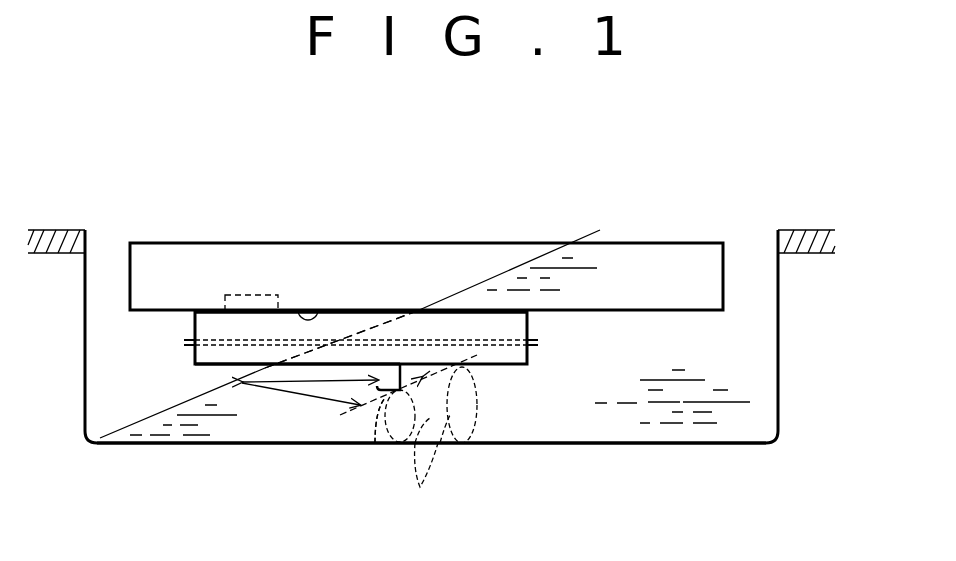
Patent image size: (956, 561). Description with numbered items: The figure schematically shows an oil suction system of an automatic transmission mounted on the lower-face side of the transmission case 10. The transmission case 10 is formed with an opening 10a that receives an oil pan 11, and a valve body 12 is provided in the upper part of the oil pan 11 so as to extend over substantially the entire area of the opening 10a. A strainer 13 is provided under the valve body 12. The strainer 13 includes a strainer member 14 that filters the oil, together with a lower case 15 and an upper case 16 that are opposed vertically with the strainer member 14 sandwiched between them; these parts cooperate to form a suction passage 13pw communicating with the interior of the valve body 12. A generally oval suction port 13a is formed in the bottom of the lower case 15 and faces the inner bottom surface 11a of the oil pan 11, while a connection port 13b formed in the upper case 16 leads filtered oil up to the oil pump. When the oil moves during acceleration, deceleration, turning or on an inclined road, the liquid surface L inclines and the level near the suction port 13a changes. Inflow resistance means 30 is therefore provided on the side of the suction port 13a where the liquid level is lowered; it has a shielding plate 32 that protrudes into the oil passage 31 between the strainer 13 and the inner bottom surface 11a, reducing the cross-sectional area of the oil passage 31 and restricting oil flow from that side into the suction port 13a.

The transmission case 10 is at (58, 230).
The opening 10a is at (778, 246).
The oil pan 11 is at (780, 393).
The inner bottom surface 11a is at (234, 443).
The valve body 12 is at (405, 244).
The strainer 13 is at (536, 322).
The suction port 13a is at (432, 374).
The connection port 13b is at (245, 295).
The suction passage 13pw is at (313, 311).
The strainer member 14 is at (385, 340).
The lower case 15 is at (195, 357).
The upper case 16 is at (195, 323).
The inflow resistance means 30 is at (325, 385).
The oil passage 31 is at (426, 442).
The shielding plate 32 is at (377, 443).
The liquid surface L is at (135, 425).